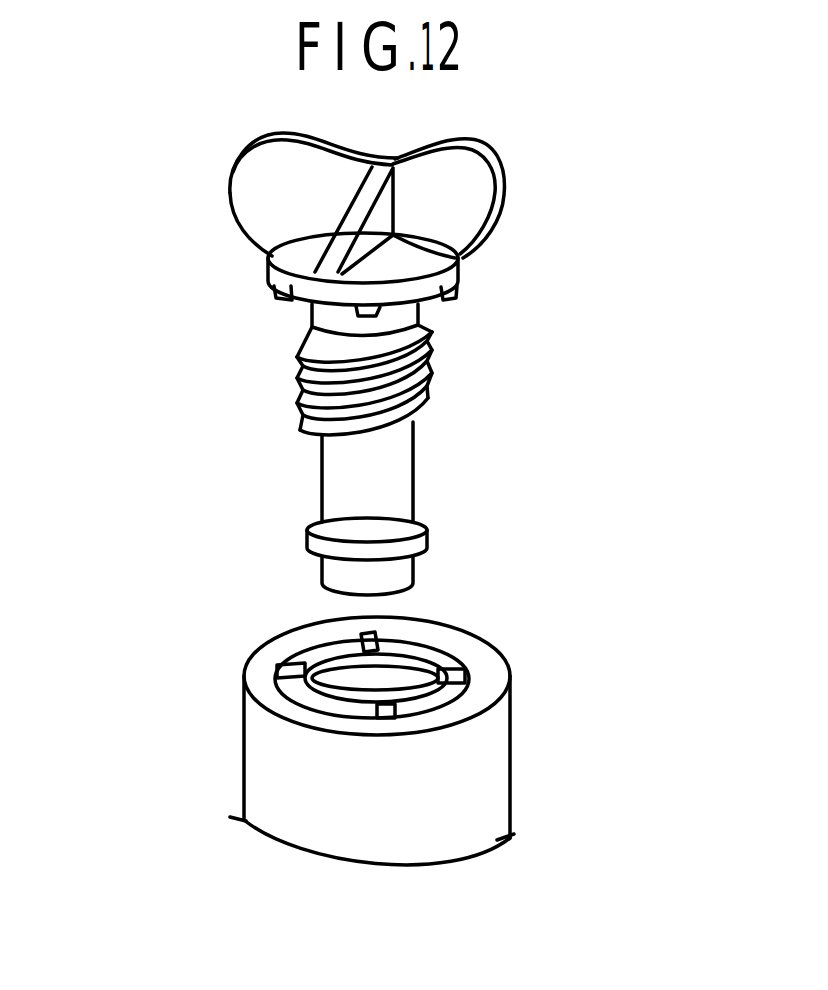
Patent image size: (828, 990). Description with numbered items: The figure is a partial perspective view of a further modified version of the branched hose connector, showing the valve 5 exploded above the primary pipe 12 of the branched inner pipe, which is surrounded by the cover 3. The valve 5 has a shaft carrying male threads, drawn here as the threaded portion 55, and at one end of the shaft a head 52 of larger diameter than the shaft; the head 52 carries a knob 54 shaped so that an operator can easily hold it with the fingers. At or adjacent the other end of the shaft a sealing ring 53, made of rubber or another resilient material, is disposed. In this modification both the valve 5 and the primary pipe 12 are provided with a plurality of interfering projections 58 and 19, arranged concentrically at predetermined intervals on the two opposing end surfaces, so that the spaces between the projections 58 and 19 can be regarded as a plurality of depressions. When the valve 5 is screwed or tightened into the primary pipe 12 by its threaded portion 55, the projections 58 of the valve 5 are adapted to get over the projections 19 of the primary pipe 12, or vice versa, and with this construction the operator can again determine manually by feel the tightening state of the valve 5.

The cover 3 is at (490, 777).
The valve 5 is at (468, 448).
The primary pipe 12 is at (430, 658).
The interfering projections 19 is at (360, 634).
The head 52 is at (436, 282).
The sealing ring 53 is at (313, 532).
The knob 54 is at (493, 160).
The threaded portion 55 is at (300, 385).
The interfering projections 58 is at (273, 291).